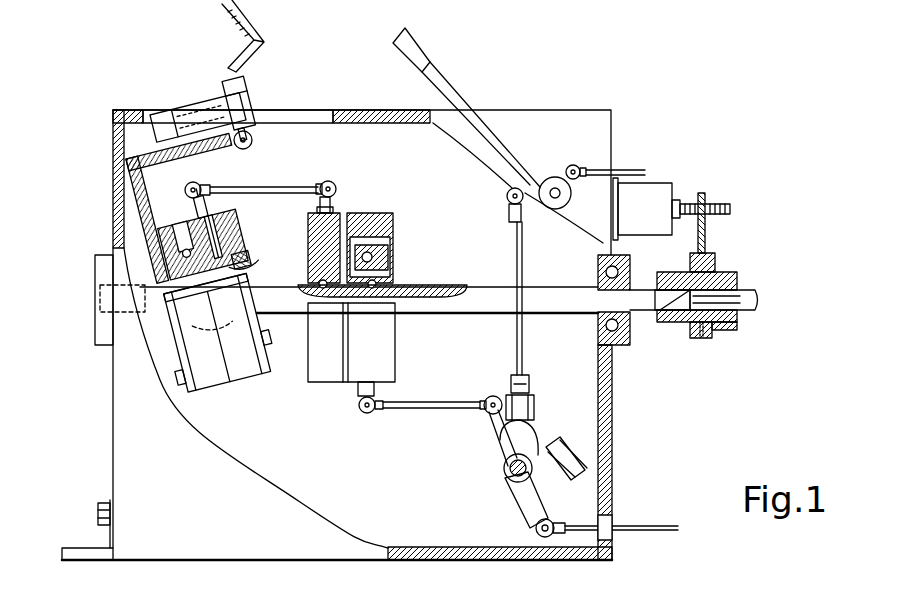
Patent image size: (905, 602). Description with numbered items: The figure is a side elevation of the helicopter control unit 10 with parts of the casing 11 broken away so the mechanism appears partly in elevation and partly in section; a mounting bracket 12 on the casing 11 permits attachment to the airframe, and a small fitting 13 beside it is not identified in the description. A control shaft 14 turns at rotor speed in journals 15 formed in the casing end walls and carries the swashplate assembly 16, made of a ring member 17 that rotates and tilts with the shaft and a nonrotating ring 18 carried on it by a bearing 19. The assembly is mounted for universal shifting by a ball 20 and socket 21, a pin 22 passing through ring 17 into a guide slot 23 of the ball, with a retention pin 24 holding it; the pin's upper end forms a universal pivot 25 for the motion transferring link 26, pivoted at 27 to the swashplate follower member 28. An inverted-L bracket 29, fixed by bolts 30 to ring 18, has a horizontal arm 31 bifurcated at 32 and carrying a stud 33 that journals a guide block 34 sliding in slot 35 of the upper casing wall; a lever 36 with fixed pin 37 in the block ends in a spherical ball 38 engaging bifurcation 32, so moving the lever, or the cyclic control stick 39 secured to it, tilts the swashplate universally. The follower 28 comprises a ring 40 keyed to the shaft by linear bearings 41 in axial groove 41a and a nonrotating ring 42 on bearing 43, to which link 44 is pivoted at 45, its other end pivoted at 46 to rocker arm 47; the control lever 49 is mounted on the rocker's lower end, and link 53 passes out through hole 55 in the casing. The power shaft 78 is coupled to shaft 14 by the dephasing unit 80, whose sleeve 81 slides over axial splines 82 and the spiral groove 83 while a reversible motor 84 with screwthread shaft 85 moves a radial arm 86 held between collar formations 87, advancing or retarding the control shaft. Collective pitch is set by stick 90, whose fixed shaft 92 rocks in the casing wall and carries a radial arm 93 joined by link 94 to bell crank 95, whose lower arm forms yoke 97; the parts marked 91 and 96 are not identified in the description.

The control unit 10 is at (575, 105).
The casing 11 is at (240, 552).
The mounting bracket 12 is at (72, 553).
The mounting bolt 13 is at (95, 512).
The control shaft 14 is at (483, 286).
The journals 15 is at (100, 300).
The swashplate assembly 16 is at (262, 398).
The ring member 17 is at (250, 342).
The nonrotating ring 18 is at (208, 390).
The bearing 19 is at (178, 245).
The ball 20 is at (240, 300).
The socket 21 is at (240, 275).
The pin 22 is at (188, 210).
The guide slot 23 is at (238, 262).
The retention pin 24 is at (222, 230).
The universal pivot 25 is at (200, 186).
The motion transferring link 26 is at (285, 186).
The pivot 27 is at (336, 188).
The swashplate follower member 28 is at (383, 210).
The bracket 29 is at (125, 208).
The bolts 30 is at (168, 388).
The horizontal arm 31 is at (152, 160).
The bifurcation 32 is at (254, 140).
The stud 33 is at (212, 140).
The guide block 34 is at (158, 118).
The guide slot 35 is at (318, 115).
The lever 36 is at (240, 97).
The fixed pin 37 is at (188, 112).
The spherical ball 38 is at (247, 148).
The cyclic pitch control stick 39 is at (248, 22).
The ring 40 is at (330, 383).
The linear bearings 41 is at (392, 270).
The axial groove 41a is at (435, 285).
The nonrotating ring 42 is at (380, 358).
The bearing 43 is at (392, 245).
The link 44 is at (425, 412).
The pivot 45 is at (366, 413).
The pivot 46 is at (488, 398).
The rocker arm 47 is at (500, 440).
The control lever 49 is at (570, 478).
The motion-transferring link 53 is at (642, 531).
The hole 55 is at (612, 518).
The power shaft 78 is at (745, 292).
The shaft drive coupling means 80 is at (742, 258).
The sleeve member 81 is at (724, 332).
The axial splines 82 is at (742, 312).
The spiral groove 83 is at (665, 298).
The reversible electric motor 84 is at (652, 200).
The screwthread shaft 85 is at (731, 209).
The radial arm 86 is at (706, 228).
The collar formations 87 is at (688, 338).
The collective pitch control stick 90 is at (440, 70).
The roller arm 91 is at (622, 170).
The fixed shaft 92 is at (553, 180).
The radial arm 93 is at (532, 205).
The link 94 is at (524, 265).
The bell crank 95 is at (536, 405).
The clevis pin 96 is at (531, 384).
The yoke 97 is at (540, 440).